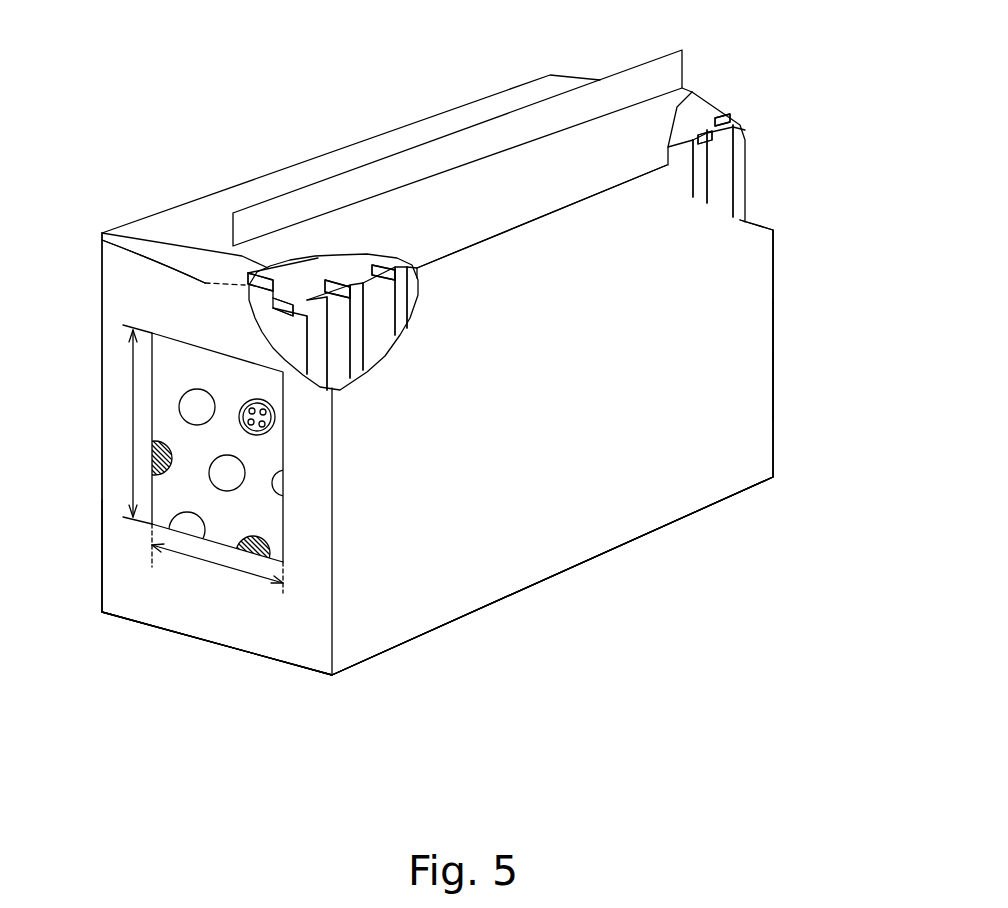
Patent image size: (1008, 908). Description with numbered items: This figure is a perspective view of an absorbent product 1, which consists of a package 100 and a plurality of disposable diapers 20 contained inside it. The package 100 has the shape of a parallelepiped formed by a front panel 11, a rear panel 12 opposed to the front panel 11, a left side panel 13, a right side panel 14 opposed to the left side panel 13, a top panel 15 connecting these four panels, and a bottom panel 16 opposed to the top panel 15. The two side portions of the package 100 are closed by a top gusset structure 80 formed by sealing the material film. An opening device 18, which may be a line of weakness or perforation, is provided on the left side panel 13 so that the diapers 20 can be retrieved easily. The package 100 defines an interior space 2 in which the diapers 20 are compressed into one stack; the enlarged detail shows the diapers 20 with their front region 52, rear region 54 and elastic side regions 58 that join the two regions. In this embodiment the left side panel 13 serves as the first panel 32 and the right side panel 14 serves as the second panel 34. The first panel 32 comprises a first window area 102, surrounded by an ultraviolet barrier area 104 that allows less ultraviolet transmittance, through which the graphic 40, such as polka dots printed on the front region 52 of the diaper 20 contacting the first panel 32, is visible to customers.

The absorbent product 1 is at (537, 677).
The interior space 2 is at (265, 270).
The front panel 11 is at (688, 492).
The rear panel 12 is at (130, 567).
The left side panel 13 is at (287, 635).
The right side panel 14 is at (733, 388).
The top panel 15 is at (240, 202).
The bottom panel 16 is at (428, 593).
The opening device 18 is at (100, 238).
The diaper 20 is at (300, 362).
The first panel 32 is at (153, 598).
The second panel 34 is at (733, 323).
The graphic 40 is at (163, 437).
The front region 52 is at (208, 372).
The rear region 54 is at (278, 276).
The elastic side region 58 is at (292, 300).
The top gusset structure 80 is at (223, 257).
The package 100 is at (733, 438).
The first window area 102 is at (290, 532).
The ultraviolet barrier area 104 is at (217, 620).